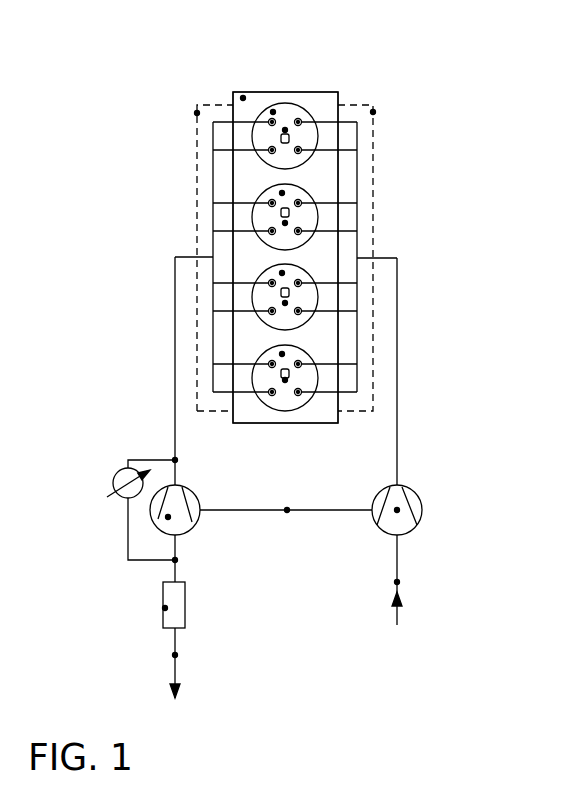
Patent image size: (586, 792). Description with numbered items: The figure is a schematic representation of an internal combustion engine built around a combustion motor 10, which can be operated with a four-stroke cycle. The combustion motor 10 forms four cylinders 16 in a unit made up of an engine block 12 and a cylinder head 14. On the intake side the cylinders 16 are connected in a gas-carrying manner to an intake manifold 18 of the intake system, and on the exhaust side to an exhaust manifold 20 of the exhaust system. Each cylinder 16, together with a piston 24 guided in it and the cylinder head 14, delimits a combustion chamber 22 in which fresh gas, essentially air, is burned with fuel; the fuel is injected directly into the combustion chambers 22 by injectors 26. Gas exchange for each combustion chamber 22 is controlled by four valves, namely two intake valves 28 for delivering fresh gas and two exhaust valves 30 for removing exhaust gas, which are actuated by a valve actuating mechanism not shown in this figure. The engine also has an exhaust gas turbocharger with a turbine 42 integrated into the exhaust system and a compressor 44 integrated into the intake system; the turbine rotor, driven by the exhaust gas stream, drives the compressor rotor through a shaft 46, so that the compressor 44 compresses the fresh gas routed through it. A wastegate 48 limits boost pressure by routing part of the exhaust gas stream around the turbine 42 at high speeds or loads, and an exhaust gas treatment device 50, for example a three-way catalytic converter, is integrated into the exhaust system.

The combustion motor 10 is at (349, 86).
The engine block 12 is at (220, 241).
The cylinder head 14 is at (243, 98).
The cylinder 16 is at (381, 214).
The intake manifold 18 is at (373, 112).
The exhaust manifold 20 is at (197, 113).
The combustion chamber 22 is at (296, 105).
The piston 24 is at (273, 112).
The injector 26 is at (285, 130).
The intake valve 28 is at (300, 150).
The exhaust valve 30 is at (270, 150).
The turbine 42 is at (168, 517).
The compressor 44 is at (400, 510).
The shaft 46 is at (287, 513).
The wastegate 48 is at (120, 457).
The exhaust gas treatment device 50 is at (165, 608).